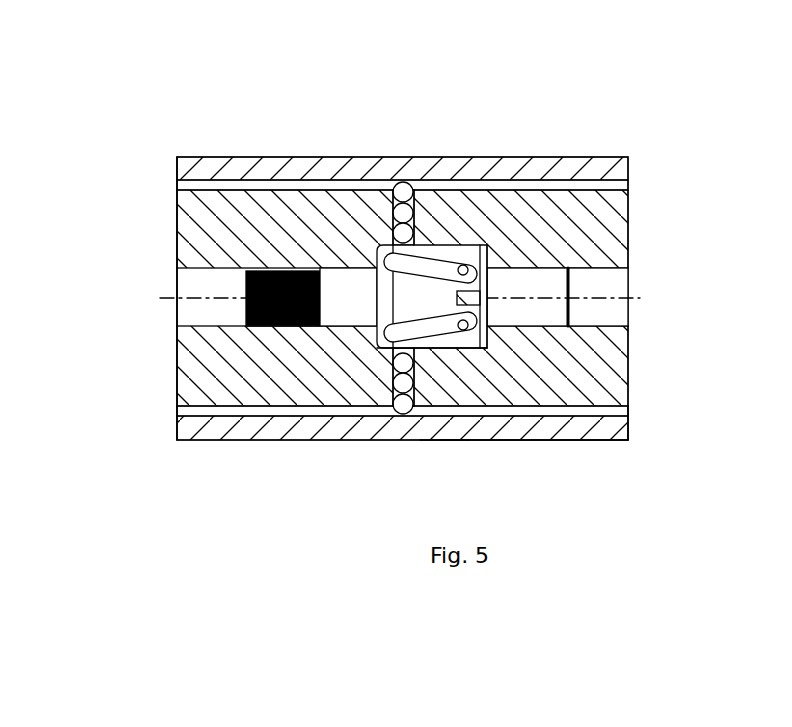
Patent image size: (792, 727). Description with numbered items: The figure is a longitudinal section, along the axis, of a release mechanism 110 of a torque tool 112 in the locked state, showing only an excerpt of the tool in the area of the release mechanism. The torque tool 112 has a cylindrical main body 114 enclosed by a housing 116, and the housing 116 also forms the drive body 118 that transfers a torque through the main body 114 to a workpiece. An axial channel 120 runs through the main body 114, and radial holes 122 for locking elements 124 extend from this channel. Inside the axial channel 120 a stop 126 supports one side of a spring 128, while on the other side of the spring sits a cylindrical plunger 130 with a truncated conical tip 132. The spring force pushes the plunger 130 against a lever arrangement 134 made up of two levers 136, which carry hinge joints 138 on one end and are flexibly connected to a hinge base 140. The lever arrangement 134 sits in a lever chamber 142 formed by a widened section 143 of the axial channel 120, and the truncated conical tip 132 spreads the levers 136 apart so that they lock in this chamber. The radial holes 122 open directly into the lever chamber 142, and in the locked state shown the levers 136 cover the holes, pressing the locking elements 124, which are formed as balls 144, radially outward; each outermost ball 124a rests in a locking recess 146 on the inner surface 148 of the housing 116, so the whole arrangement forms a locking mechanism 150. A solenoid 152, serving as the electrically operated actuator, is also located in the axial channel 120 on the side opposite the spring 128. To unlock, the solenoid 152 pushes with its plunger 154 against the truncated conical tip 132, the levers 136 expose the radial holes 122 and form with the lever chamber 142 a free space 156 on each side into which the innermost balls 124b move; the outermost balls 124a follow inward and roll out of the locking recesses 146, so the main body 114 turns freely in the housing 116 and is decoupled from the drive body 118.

The release mechanism 110 is at (432, 240).
The torque tool 112 is at (143, 252).
The cylindrical main body 114 is at (381, 405).
The housing 116 is at (395, 470).
The drive body 118 is at (435, 136).
The axial channel 120 is at (124, 350).
The radial holes 122 is at (448, 184).
The locking elements 124 is at (363, 358).
The outermost radial balls 124a is at (363, 462).
The innermost balls 124b is at (347, 333).
The stop 126 is at (190, 286).
The spring 128 is at (251, 445).
The cylindrical plunger 130 is at (314, 215).
The truncated conical tip 132 is at (458, 195).
The lever arrangement 134 is at (579, 463).
The levers 136 is at (542, 485).
The hinge joints 138 is at (684, 428).
The hinge base 140 is at (558, 371).
The lever chamber 142 is at (519, 231).
The widened section 143 is at (525, 506).
The balls 144 is at (347, 235).
The locking recess 146 is at (359, 134).
The inner surface 148 is at (354, 226).
The locking mechanism 150 is at (455, 279).
The solenoid 152 is at (610, 259).
The plunger 154 is at (598, 316).
The free space 156 is at (501, 205).